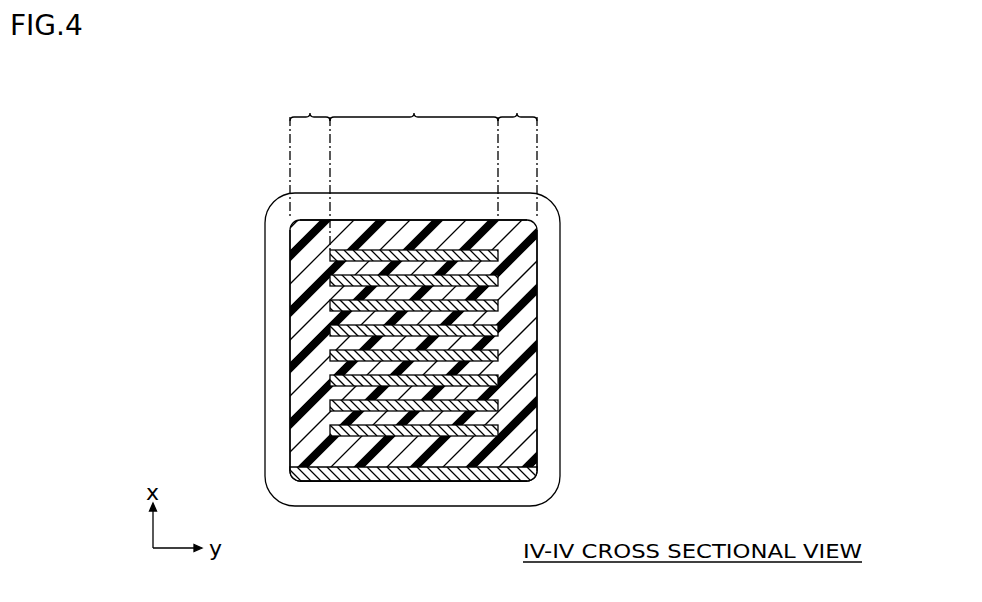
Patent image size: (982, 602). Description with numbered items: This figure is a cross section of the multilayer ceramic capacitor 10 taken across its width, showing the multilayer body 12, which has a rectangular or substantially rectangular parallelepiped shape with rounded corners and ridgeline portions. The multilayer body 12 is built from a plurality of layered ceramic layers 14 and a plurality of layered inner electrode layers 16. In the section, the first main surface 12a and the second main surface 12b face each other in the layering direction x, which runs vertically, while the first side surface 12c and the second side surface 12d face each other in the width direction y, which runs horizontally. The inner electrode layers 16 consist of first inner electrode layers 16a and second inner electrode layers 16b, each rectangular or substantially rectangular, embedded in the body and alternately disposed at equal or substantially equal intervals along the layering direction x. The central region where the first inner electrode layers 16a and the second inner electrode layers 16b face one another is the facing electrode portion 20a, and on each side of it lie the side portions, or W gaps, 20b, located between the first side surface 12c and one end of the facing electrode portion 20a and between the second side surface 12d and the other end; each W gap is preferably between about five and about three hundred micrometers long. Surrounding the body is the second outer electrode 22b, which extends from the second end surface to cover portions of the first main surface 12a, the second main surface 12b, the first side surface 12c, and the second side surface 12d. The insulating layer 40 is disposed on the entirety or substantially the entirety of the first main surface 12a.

The multilayer ceramic capacitor 10 is at (240, 189).
The multilayer body 12 is at (406, 341).
The first main surface 12a is at (411, 470).
The second main surface 12b is at (366, 218).
The first side surface 12c is at (537, 371).
The second side surface 12d is at (290, 356).
The ceramic layers 14 is at (468, 290).
The inner electrode layers 16 is at (128, 362).
The first inner electrode layers 16a is at (343, 307).
The second inner electrode layers 16b is at (340, 332).
The facing electrode portion 20a is at (414, 163).
The side portions (W gaps) 20b is at (414, 147).
The second outer electrode 22b is at (560, 320).
The insulating layer 40 is at (471, 474).